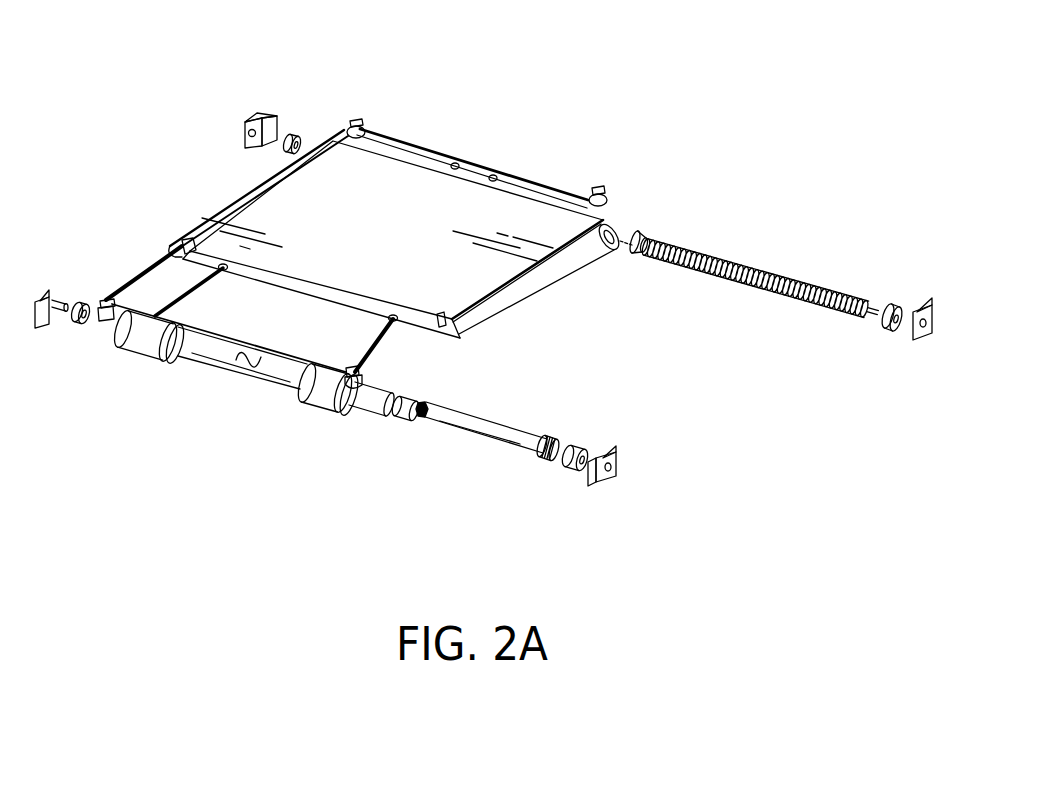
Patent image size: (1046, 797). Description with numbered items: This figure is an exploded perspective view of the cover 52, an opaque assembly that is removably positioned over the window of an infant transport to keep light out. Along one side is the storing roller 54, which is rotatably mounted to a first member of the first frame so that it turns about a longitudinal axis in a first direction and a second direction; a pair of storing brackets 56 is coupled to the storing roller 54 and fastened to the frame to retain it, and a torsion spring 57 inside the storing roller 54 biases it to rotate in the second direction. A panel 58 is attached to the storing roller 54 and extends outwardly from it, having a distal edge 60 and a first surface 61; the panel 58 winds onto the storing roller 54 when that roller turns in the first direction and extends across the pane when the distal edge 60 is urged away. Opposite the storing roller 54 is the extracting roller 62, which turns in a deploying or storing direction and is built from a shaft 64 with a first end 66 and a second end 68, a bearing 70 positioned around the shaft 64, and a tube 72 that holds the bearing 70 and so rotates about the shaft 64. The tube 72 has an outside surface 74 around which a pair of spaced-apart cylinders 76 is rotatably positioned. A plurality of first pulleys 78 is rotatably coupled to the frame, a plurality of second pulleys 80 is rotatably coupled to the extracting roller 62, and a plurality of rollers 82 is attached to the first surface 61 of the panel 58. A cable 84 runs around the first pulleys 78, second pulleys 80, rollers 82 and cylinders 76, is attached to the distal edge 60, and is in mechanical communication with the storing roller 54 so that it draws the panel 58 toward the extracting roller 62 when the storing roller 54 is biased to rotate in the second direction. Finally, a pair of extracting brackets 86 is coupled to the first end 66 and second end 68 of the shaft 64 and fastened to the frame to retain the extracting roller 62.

The cover 52 is at (533, 117).
The storing roller 54 is at (612, 252).
The storing bracket 56 is at (258, 112).
The torsion spring 57 is at (773, 272).
The panel 58 is at (270, 208).
The distal edge 60 is at (318, 292).
The first surface 61 is at (384, 195).
The extracting roller 62 is at (367, 432).
The shaft 64 is at (493, 444).
The first end 66 is at (425, 408).
The second end 68 is at (570, 442).
The bearing 70 is at (400, 418).
The tube 72 is at (205, 366).
The outside surface 74 is at (236, 351).
The cylinder 76 is at (147, 330).
The first pulley 78 is at (357, 118).
The second pulley 80 is at (108, 328).
The roller 82 is at (181, 240).
The cable 84 is at (450, 152).
The extracting bracket 86 is at (38, 298).